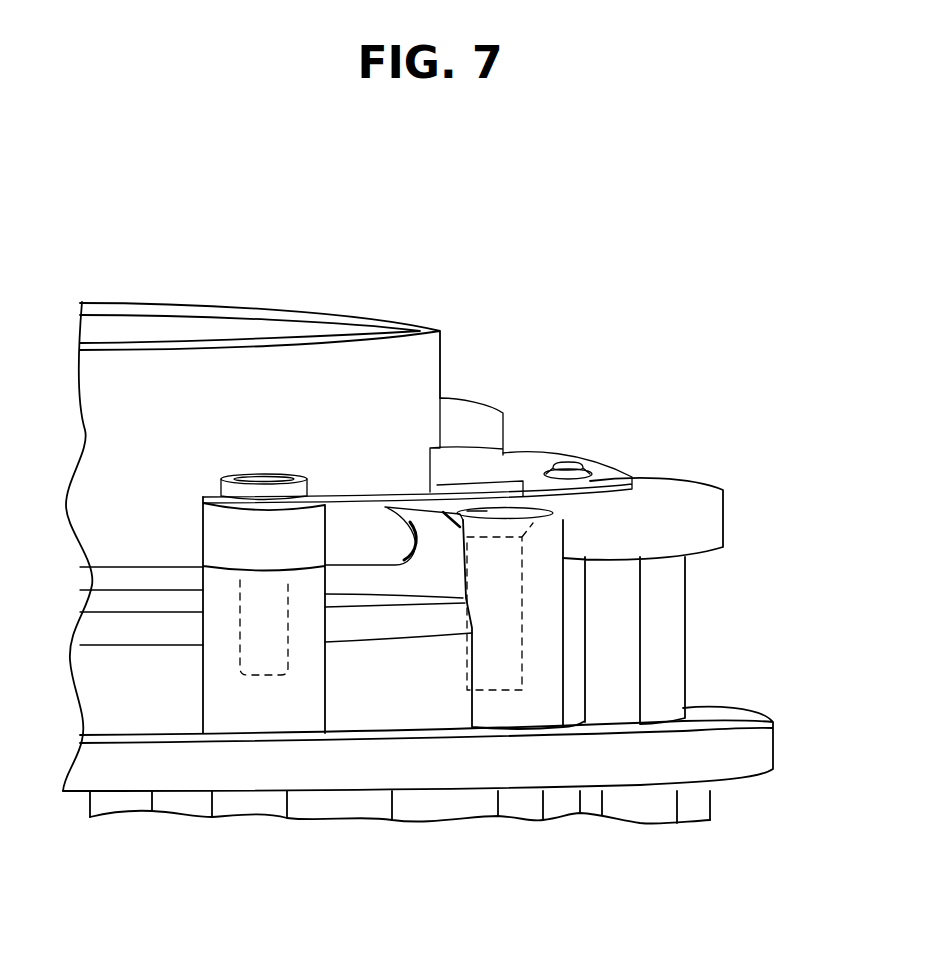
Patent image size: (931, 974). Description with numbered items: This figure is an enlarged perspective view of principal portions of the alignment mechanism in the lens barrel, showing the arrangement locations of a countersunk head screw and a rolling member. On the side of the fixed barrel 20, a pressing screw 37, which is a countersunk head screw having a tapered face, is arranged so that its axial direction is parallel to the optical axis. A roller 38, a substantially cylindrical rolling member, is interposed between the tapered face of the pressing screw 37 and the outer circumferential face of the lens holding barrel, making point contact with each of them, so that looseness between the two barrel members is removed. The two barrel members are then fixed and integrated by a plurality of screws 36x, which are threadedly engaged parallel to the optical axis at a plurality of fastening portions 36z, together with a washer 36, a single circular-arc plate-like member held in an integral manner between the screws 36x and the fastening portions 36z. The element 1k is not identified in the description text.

The cylinder body 1k is at (393, 368).
The washer 36 is at (598, 467).
The screws 36x is at (262, 476).
The fastening portions 36z is at (222, 655).
The pressing screw 37 is at (503, 507).
The roller 38 is at (437, 547).
The fixed barrel 20 is at (660, 623).